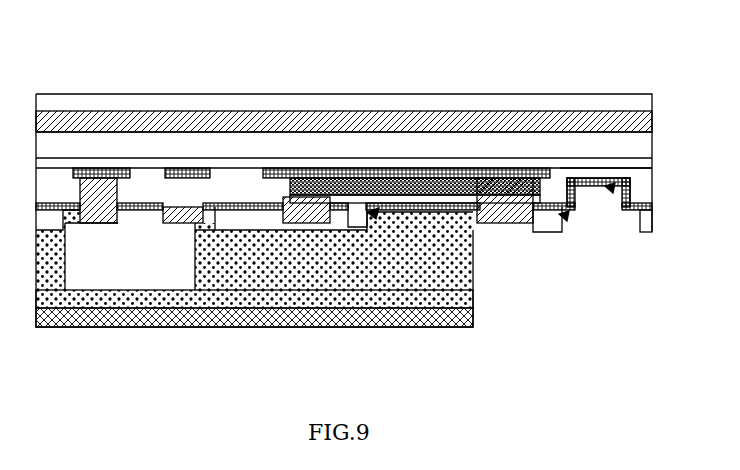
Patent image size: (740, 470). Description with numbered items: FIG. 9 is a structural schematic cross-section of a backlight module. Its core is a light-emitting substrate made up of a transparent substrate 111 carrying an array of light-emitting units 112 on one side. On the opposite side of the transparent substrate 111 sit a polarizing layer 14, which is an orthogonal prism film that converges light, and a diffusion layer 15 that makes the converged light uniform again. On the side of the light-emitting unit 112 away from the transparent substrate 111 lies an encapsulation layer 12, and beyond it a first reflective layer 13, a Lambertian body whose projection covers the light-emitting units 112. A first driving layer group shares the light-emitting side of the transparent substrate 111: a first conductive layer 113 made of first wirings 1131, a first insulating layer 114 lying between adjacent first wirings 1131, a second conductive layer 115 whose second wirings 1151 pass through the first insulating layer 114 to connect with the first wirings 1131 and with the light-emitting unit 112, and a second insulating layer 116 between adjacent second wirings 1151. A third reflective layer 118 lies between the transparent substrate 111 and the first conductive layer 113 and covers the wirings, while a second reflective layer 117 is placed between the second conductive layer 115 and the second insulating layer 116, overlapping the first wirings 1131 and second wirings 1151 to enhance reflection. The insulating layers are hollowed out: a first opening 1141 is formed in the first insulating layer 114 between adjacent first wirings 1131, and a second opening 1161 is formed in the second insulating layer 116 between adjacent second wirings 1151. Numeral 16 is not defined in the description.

The encapsulation layer 12 is at (242, 292).
The first reflective layer 13 is at (54, 318).
The polarizing layer 14 is at (372, 112).
The diffusion layer 15 is at (433, 128).
The encapsulation layer 16 is at (585, 162).
The transparent substrate 111 is at (492, 152).
The light-emitting unit 112 is at (92, 278).
The first conductive layer 113 is at (306, 113).
The first wiring 1131 is at (100, 170).
The first insulating layer 114 is at (430, 222).
The first opening 1141 is at (614, 188).
The second conductive layer 115 is at (212, 359).
The second wiring 1151 is at (118, 223).
The second insulating layer 116 is at (283, 225).
The second opening 1161 is at (193, 224).
The second reflective layer 117 is at (533, 170).
The third reflective layer 118 is at (348, 225).